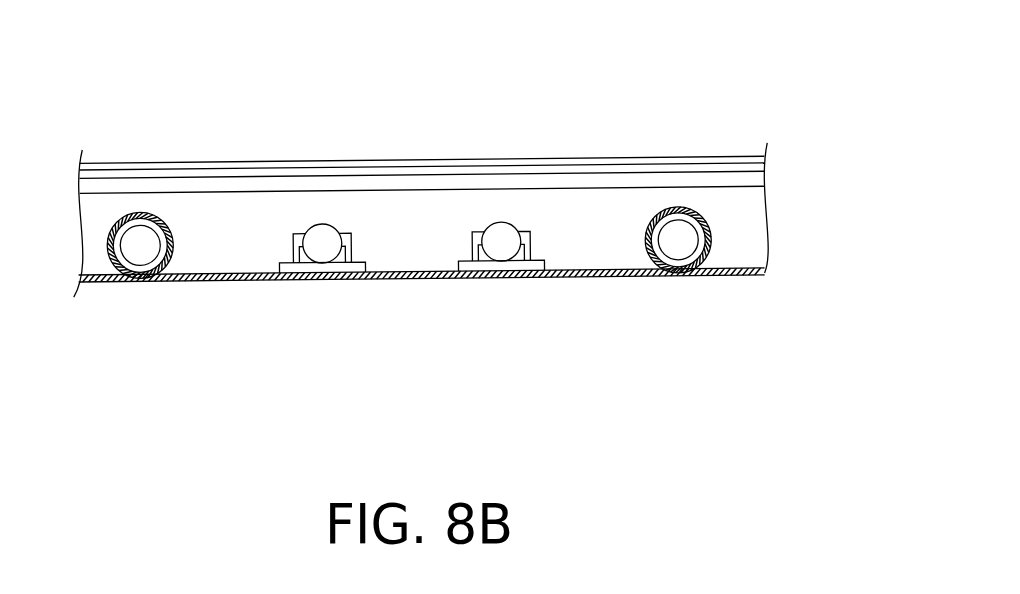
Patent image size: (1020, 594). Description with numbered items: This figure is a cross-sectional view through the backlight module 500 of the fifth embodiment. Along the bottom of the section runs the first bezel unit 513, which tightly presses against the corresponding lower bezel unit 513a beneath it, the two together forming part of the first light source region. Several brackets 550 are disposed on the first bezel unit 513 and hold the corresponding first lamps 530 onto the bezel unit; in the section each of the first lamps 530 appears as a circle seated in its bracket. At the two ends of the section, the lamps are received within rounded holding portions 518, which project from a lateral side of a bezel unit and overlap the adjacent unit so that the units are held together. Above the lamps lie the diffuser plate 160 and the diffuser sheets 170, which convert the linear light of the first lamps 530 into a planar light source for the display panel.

The backlight module 500 is at (875, 58).
The diffuser sheets 170 is at (748, 156).
The diffuser plate 160 is at (757, 174).
The first bezel unit 513 is at (101, 270).
The lower bezel unit 513a is at (754, 265).
The holding portion 518 is at (166, 255).
The first lamps 530 is at (141, 247).
The brackets 550 is at (348, 250).